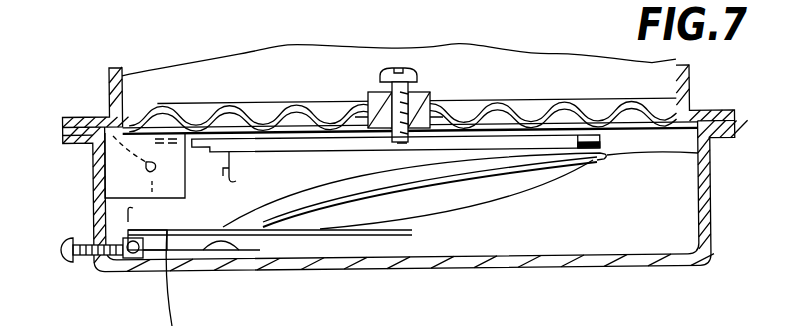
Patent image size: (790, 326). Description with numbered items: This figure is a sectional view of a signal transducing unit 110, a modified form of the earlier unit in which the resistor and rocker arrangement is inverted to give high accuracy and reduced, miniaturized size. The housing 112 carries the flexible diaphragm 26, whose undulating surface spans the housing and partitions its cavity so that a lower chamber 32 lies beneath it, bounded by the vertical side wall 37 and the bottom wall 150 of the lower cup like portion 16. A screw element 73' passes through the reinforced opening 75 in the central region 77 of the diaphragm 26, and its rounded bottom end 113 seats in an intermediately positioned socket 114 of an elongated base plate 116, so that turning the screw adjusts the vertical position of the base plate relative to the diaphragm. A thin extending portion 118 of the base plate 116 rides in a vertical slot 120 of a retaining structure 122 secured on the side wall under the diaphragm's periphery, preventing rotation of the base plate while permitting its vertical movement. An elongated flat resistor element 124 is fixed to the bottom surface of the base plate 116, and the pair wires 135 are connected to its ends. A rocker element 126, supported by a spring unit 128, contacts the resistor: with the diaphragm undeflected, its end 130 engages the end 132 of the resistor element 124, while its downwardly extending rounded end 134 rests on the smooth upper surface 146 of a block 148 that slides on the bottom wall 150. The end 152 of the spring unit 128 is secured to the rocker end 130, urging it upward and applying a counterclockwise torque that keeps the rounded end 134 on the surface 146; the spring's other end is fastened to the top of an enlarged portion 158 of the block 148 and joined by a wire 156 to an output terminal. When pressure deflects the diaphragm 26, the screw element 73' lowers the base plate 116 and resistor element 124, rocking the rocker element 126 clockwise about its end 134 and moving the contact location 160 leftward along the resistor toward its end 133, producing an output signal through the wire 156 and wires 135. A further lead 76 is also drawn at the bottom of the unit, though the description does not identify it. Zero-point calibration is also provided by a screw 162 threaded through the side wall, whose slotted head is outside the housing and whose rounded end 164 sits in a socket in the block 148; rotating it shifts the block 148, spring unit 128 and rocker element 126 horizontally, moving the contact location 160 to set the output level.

The lower cup like portion 16 is at (94, 168).
The flexible diaphragm 26 is at (267, 110).
The lower chamber 32 is at (680, 243).
The vertical side wall 37 is at (710, 197).
The screw element 73' is at (413, 77).
The reinforced opening 75 is at (385, 143).
The lead wire 76 is at (430, 325).
The central region 77 is at (410, 143).
The signal transducing unit 110 is at (547, 47).
The housing 112 is at (690, 80).
The rounded bottom end 113 is at (377, 140).
The socket 114 is at (466, 86).
The elongated base plate 116 is at (585, 140).
The thin extending portion 118 is at (190, 150).
The vertical slot 120 is at (108, 126).
The retaining structure 122 is at (107, 182).
The flat resistor element 124 is at (255, 152).
The rocker element 126 is at (460, 180).
The spring unit 128 is at (403, 220).
The end of rocker element 130 is at (557, 158).
The end of resistor element 132 is at (710, 155).
The end of resistor element 133 is at (215, 147).
The rounded end 134 is at (262, 237).
The pair wires 135 is at (238, 133).
The smooth upper surface 146 is at (230, 258).
The block 148 is at (300, 262).
The bottom wall 150 is at (627, 268).
The end of spring unit 152 is at (603, 163).
The wire 156 is at (128, 222).
The enlarged portion 158 is at (178, 252).
The contact location 160 is at (558, 150).
The screw 162 is at (80, 258).
The rounded end of screw 164 is at (137, 277).